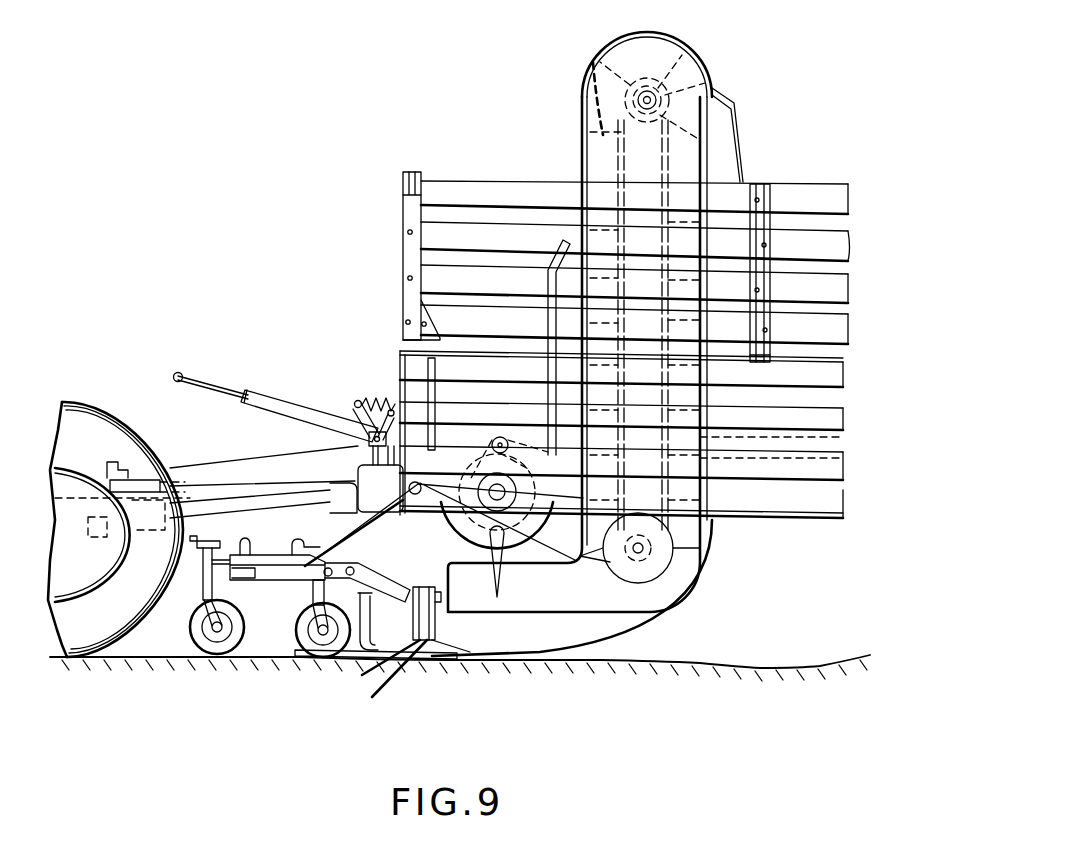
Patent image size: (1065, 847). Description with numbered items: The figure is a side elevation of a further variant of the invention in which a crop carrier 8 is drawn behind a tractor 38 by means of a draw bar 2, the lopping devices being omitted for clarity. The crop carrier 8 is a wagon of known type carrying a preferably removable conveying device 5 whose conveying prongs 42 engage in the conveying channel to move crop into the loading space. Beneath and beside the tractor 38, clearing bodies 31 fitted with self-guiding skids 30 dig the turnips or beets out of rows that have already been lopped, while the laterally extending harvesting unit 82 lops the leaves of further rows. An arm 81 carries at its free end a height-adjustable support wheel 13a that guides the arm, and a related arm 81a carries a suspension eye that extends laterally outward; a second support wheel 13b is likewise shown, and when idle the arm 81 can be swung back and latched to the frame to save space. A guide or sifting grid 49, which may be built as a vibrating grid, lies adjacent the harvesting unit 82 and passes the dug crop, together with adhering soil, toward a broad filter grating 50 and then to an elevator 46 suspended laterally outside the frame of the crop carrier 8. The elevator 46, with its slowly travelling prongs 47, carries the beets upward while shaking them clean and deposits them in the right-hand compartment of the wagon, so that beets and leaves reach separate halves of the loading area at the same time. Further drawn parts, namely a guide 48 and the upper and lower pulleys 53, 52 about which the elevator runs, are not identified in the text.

The draw bar 2 is at (220, 468).
The conveying device 5 is at (482, 458).
The crop carrier 8 is at (386, 258).
The support wheel 13a is at (194, 628).
The rear caster wheel 13b is at (325, 590).
The guide skids 30 is at (300, 655).
The clearing bodies 31 is at (406, 670).
The tractor 38 is at (103, 418).
The conveying prongs 42 is at (487, 556).
The elevator 46 is at (583, 112).
The prongs 47 is at (663, 127).
The guide 48 is at (580, 72).
The guide or sifting grid 49 is at (543, 650).
The filter grating 50 is at (685, 292).
The lower pulley 52 is at (650, 560).
The upper pulley 53 is at (690, 52).
The arm 81 is at (350, 526).
The arm 81a is at (268, 556).
The harvesting unit 82 is at (284, 594).